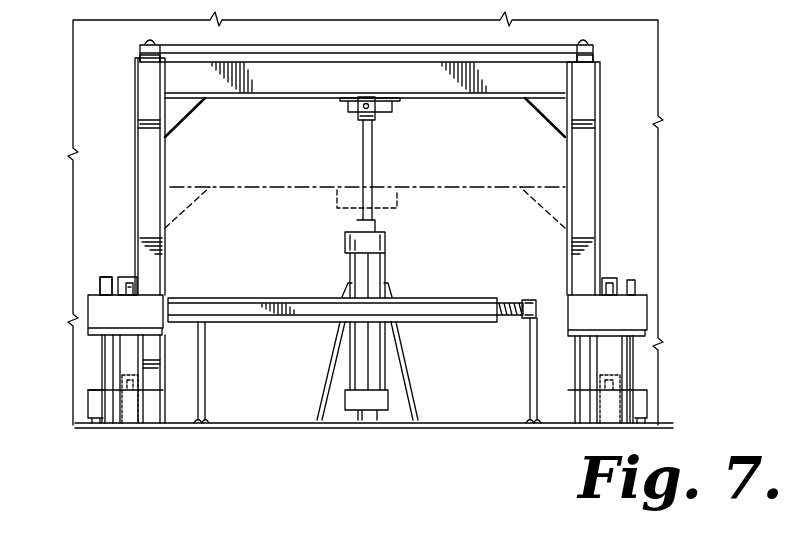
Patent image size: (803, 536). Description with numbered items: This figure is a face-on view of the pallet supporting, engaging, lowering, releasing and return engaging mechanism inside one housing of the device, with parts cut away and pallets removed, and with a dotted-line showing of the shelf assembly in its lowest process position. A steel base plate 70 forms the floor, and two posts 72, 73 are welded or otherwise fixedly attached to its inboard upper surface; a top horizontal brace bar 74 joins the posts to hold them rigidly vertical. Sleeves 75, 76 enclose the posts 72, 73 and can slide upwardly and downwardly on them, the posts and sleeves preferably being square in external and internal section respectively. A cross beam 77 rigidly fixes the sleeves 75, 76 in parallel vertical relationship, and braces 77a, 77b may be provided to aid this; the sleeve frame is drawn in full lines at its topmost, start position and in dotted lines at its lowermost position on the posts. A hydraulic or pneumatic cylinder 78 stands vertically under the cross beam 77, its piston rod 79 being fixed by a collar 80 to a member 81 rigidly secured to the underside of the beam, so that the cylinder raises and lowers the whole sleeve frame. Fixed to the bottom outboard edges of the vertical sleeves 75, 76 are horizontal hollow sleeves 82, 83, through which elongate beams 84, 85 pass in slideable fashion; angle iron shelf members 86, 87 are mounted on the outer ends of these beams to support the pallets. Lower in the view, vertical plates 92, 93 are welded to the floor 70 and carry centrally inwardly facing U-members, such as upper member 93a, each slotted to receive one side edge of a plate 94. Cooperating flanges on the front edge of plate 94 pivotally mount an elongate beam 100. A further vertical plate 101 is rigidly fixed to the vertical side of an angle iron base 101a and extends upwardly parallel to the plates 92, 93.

The base plate 70 is at (283, 412).
The post 72 is at (138, 56).
The post 73 is at (598, 56).
The top horizontal brace bar 74 is at (336, 46).
The sleeve 75 is at (135, 181).
The sleeve 76 is at (601, 171).
The cross beam 77 is at (268, 160).
The brace 77a is at (173, 126).
The brace 77b is at (548, 124).
The hydraulic or pneumatic cylinder 78 is at (385, 269).
The piston rod 79 is at (372, 171).
The collar 80 is at (375, 119).
The member 81 is at (393, 102).
The horizontal hollow sleeve 82 is at (122, 277).
The horizontal hollow sleeve 83 is at (606, 277).
The elongate beam 84 is at (118, 291).
The elongate beam 85 is at (614, 278).
The angle iron shelf member 86 is at (95, 328).
The angle iron shelf member 87 is at (638, 330).
The vertical plate 92 is at (206, 376).
The vertical plate 93 is at (529, 374).
The upper member 93a is at (533, 299).
The plate 94 is at (510, 300).
The elongate beam 100 is at (305, 297).
The vertical plate 101 is at (100, 285).
The angle iron base 101a is at (83, 413).